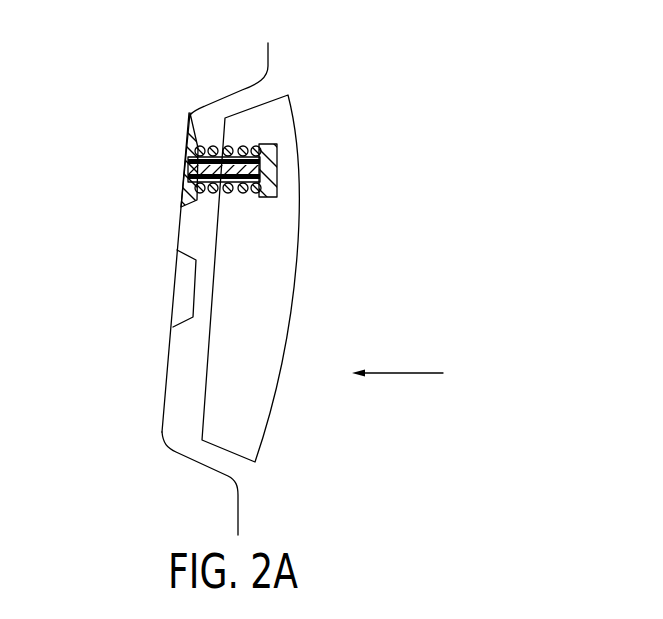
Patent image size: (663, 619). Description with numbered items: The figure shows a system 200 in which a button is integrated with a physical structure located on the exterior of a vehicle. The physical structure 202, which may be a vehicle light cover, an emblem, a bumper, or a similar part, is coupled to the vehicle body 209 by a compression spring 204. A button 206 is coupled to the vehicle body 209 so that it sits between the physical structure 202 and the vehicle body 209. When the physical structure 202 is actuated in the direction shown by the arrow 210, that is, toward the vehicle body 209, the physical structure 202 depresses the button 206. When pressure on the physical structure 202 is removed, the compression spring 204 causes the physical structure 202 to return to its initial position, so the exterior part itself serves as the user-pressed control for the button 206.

The system 200 is at (131, 94).
The physical structure 202 is at (298, 150).
The compression spring 204 is at (191, 113).
The button 206 is at (183, 320).
The vehicle body 209 is at (178, 222).
The arrow 210 is at (397, 373).